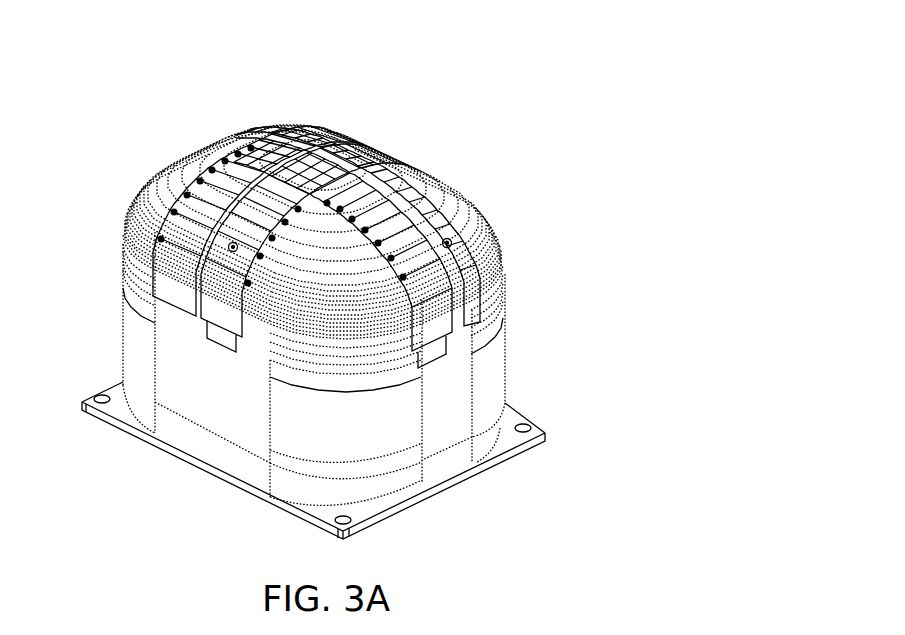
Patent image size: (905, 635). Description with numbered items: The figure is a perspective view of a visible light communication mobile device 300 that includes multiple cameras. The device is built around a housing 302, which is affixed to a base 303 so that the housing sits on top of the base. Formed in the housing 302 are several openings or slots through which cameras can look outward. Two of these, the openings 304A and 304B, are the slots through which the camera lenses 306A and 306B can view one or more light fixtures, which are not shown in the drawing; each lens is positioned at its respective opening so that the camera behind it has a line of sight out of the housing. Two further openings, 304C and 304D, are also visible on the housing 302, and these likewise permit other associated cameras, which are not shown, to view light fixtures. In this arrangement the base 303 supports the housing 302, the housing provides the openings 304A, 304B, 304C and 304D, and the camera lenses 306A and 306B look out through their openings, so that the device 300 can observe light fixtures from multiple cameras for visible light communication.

The VLC mobile device 300 is at (443, 50).
The housing 302 is at (497, 336).
The base 303 is at (517, 422).
The opening 304A is at (217, 298).
The opening 304B is at (410, 217).
The opening 304C is at (258, 157).
The opening 304D is at (357, 167).
The camera lens 306A is at (228, 247).
The camera lens 306B is at (452, 243).